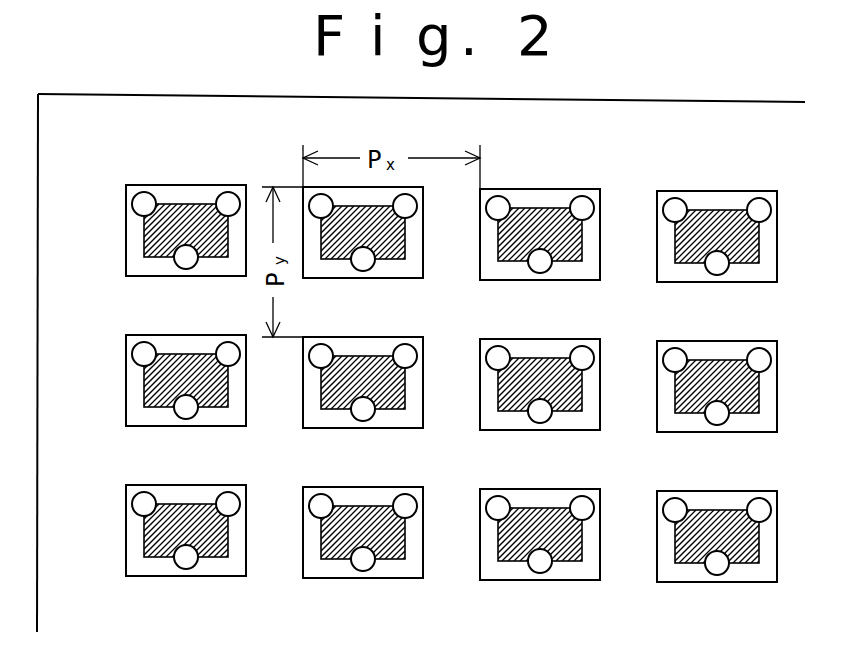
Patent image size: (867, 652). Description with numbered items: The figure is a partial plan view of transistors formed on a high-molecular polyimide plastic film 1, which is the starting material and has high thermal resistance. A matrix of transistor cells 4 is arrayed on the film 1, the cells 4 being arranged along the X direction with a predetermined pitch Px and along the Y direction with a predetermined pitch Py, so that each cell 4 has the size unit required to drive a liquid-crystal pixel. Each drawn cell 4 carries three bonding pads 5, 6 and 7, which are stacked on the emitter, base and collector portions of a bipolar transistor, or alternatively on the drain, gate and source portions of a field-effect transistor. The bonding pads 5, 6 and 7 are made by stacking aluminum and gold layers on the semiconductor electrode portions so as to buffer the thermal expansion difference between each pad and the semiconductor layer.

The plastic film 1 is at (620, 158).
The transistor cell 4 is at (172, 215).
The bonding pad 5 is at (142, 503).
The bonding pad 6 is at (184, 558).
The bonding pad 7 is at (226, 503).